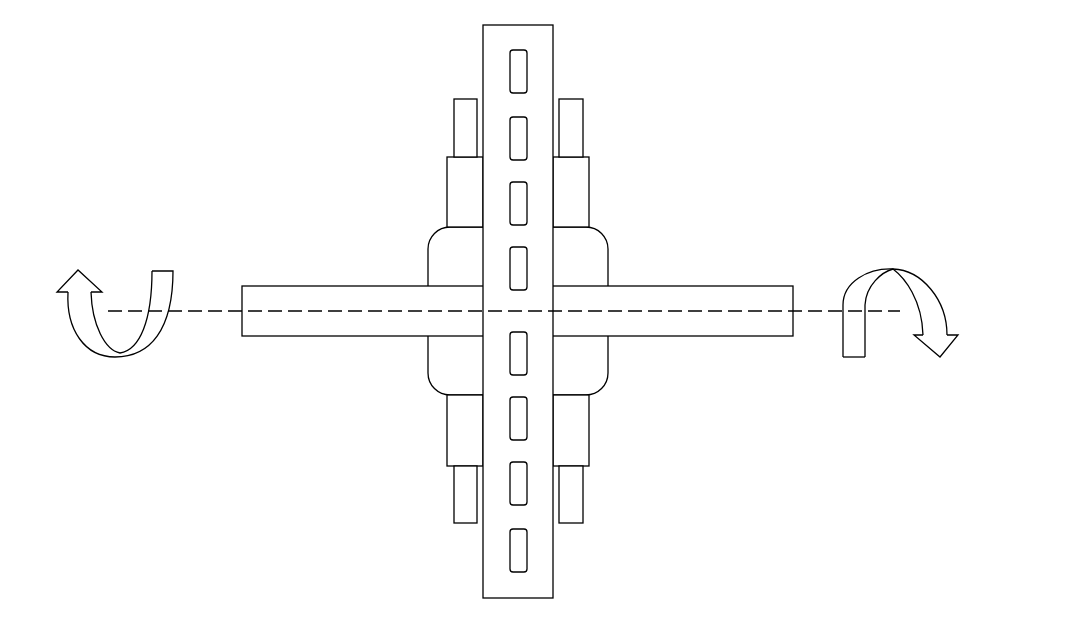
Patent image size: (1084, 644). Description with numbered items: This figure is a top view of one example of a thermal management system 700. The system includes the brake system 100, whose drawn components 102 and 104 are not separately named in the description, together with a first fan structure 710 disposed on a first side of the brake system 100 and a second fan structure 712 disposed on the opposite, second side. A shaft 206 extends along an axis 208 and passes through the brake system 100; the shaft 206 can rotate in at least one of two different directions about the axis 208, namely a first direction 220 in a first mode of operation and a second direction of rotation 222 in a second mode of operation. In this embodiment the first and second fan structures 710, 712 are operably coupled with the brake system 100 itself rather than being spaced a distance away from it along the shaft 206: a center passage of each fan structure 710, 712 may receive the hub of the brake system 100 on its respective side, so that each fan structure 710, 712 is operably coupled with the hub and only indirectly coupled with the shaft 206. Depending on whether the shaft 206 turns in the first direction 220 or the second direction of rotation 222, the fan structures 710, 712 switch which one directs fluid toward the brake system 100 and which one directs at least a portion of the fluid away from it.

The thermal management system 700 is at (240, 43).
The brake system 100 is at (434, 57).
The connector housing with slots 102 is at (537, 55).
The base portion 104 is at (615, 238).
The first fan structure 710 is at (447, 193).
The second fan structure 712 is at (590, 193).
The shaft 206 is at (262, 285).
The axis 208 is at (820, 310).
The first direction 220 is at (113, 272).
The second direction of rotation 222 is at (892, 260).